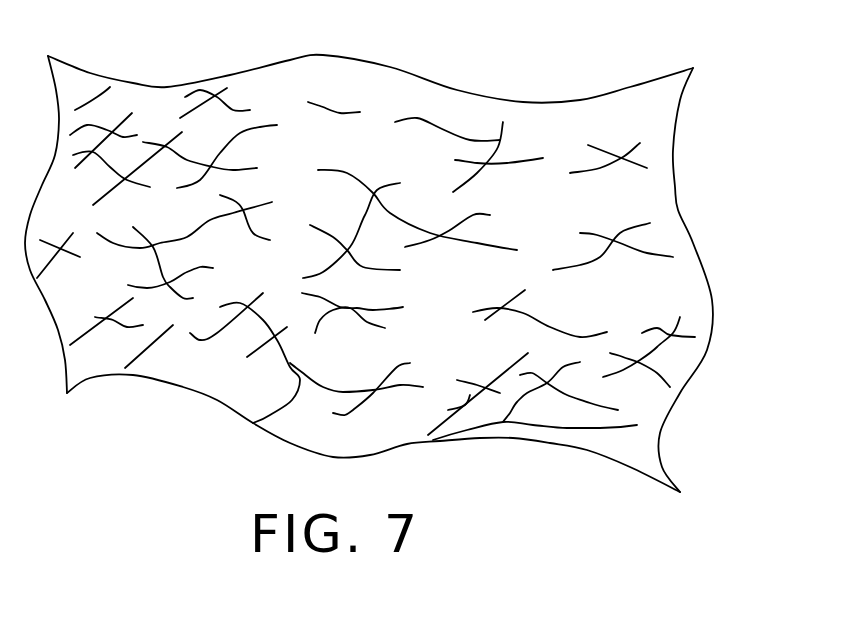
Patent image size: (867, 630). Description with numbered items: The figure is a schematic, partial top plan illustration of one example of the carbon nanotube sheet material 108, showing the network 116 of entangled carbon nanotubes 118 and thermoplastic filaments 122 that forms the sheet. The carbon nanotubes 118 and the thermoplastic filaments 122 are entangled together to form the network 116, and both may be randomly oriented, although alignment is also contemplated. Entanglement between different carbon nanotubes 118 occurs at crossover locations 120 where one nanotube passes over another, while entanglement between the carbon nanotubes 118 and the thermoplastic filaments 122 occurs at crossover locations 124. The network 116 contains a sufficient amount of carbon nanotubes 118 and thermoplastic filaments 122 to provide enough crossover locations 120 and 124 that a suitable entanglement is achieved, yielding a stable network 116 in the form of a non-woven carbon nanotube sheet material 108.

The carbon nanotube sheet material 108 is at (410, 254).
The network 116 is at (694, 243).
The carbon nanotubes 118 is at (345, 415).
The crossover locations 120 is at (623, 157).
The thermoplastic filaments 122 is at (253, 423).
The crossover locations 124 is at (503, 422).